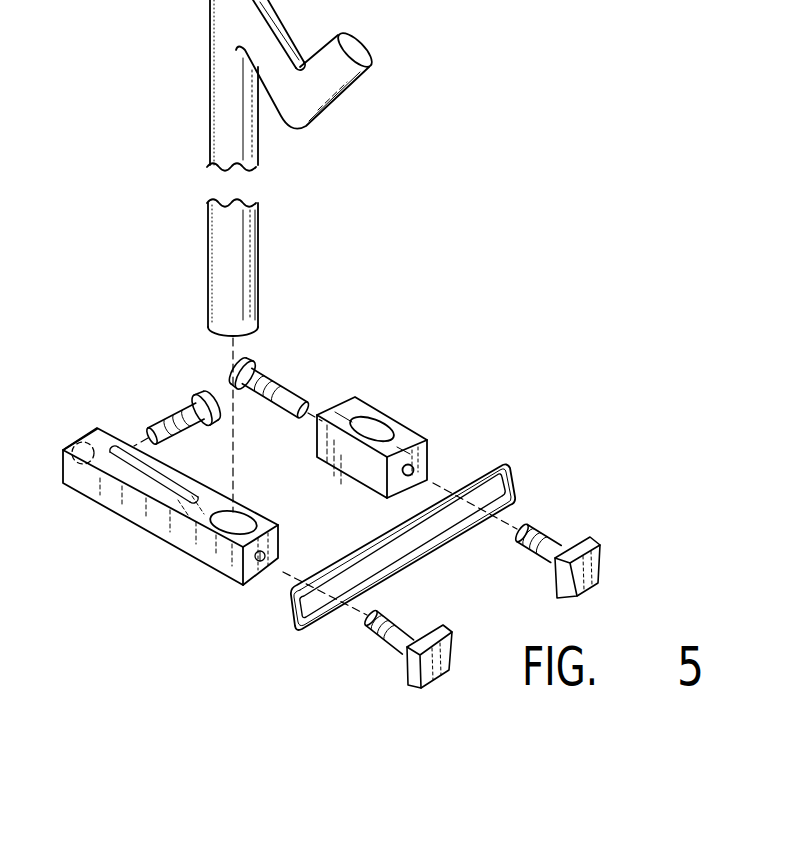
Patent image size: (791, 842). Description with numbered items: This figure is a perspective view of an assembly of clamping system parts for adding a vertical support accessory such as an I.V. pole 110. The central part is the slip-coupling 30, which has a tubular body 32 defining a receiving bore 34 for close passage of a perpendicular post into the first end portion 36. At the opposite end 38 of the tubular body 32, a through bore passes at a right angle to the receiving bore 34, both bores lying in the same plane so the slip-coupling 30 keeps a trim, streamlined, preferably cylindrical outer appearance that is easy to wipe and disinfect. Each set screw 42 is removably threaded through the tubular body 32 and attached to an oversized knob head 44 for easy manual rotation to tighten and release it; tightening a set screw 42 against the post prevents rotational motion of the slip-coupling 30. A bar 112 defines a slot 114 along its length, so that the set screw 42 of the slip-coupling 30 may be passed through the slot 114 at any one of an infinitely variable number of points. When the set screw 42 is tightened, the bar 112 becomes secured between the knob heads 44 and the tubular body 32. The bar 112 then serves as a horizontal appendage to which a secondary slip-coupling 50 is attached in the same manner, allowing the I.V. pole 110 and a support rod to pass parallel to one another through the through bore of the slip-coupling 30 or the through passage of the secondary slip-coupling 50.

The I.V. pole 110 is at (260, 287).
The set screw 42 is at (175, 410).
The knob head 44 is at (597, 587).
The secondary slip-coupling 50 is at (418, 415).
The slip-coupling 30 is at (137, 542).
The first end portion 36 is at (88, 427).
The receiving bore 34 is at (100, 483).
The tubular body 32 is at (187, 542).
The opposite end 38 is at (262, 563).
The bar 112 is at (507, 463).
The slot 114 is at (513, 493).